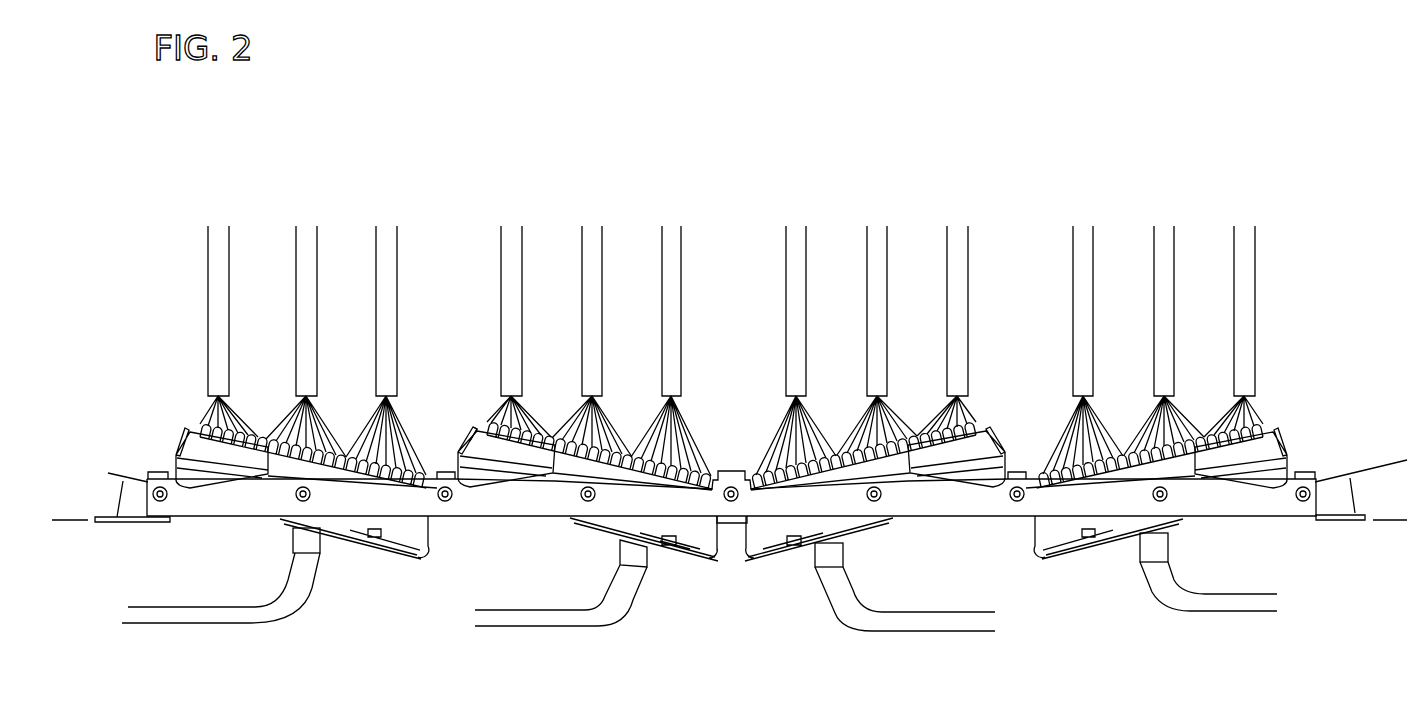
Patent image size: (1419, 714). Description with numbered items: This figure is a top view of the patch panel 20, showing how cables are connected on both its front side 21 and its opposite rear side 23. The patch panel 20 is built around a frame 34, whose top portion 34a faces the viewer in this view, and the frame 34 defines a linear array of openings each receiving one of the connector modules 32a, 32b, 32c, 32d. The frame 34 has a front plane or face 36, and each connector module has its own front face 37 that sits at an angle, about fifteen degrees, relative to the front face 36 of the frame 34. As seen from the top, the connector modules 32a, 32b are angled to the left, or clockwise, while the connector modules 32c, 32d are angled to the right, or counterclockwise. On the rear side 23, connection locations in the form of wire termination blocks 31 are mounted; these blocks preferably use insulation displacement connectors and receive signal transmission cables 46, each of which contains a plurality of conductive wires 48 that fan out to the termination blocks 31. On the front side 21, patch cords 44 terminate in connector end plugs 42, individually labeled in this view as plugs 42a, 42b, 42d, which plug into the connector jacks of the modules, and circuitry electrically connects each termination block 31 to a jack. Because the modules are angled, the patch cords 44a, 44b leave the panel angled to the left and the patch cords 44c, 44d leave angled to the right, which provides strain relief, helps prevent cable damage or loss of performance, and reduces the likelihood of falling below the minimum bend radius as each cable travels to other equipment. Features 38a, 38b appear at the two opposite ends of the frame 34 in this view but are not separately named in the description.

The patch panel 20 is at (733, 470).
The front side 21 is at (675, 553).
The rear side 23 is at (487, 417).
The termination block 31 is at (258, 432).
The connector module 32a is at (420, 557).
The connector module 32b is at (593, 465).
The connector module 32c is at (858, 530).
The connector module 32d is at (1050, 555).
The frame 34 is at (526, 517).
The top portion 34a is at (372, 506).
The front face 36 is at (62, 520).
The front face 37 is at (130, 480).
The end bracket 38a is at (118, 495).
The end bracket 38b is at (1352, 500).
The connector end plug 42 is at (292, 560).
The inlet fitting 42a is at (293, 540).
The inlet fitting 42b is at (622, 545).
The inlet fitting 42d is at (1140, 550).
The patch cord 44 is at (699, 614).
The patch cord 44a is at (253, 623).
The patch cord 44b is at (548, 626).
The patch cord 44c is at (932, 631).
The patch cord 44d is at (1222, 611).
The signal transmission cable 46 is at (229, 257).
The conductive wire 48 is at (213, 405).